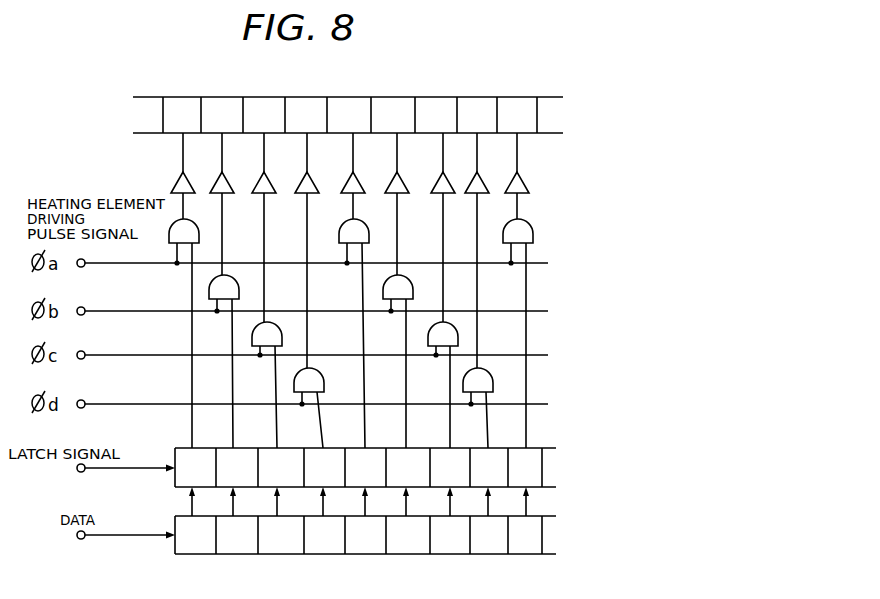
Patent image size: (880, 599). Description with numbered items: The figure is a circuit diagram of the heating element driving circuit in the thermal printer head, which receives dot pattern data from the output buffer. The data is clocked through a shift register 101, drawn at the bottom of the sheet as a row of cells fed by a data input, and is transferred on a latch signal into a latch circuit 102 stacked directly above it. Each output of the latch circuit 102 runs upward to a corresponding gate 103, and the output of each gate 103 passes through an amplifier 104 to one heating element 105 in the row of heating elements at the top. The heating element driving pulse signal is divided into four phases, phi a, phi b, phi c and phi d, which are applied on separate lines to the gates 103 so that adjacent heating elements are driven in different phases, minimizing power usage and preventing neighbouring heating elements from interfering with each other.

The shift register 101 is at (487, 554).
The latch circuit 102 is at (535, 447).
The gate 103 is at (533, 230).
The amplifier 104 is at (175, 184).
The heating element 105 is at (181, 97).